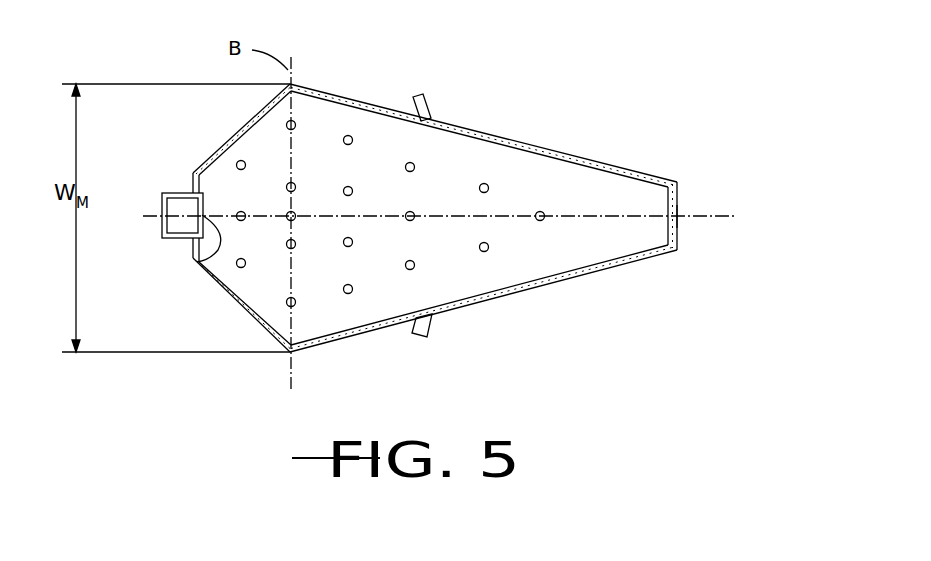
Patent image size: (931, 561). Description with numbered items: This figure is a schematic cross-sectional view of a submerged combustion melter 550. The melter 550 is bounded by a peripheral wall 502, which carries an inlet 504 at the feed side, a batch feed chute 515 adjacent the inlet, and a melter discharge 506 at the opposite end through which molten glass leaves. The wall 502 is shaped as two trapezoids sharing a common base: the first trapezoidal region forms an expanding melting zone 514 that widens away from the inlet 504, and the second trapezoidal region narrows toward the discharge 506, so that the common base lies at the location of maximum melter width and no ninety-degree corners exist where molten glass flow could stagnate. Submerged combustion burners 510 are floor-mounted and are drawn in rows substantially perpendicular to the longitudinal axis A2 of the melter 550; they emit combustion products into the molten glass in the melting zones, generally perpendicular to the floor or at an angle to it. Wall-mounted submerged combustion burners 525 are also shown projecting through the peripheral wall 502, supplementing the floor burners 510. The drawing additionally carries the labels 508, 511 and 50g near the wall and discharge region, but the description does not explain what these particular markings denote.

The peripheral wall 502 is at (356, 98).
The inlet 504 is at (207, 254).
The melter discharge 506 is at (677, 208).
The lower nozzle wall 508 is at (497, 163).
The submerged combustion burners 510 is at (548, 168).
The outlet opening 511 is at (679, 240).
The expanding melting zone 514 is at (258, 148).
The batch feed chute 515 is at (176, 193).
The wall-mounted submerged combustion burners 525 is at (428, 108).
The submerged combustion melter 550 is at (521, 60).
The gap 50g is at (200, 250).
The longitudinal axis A2 is at (712, 220).